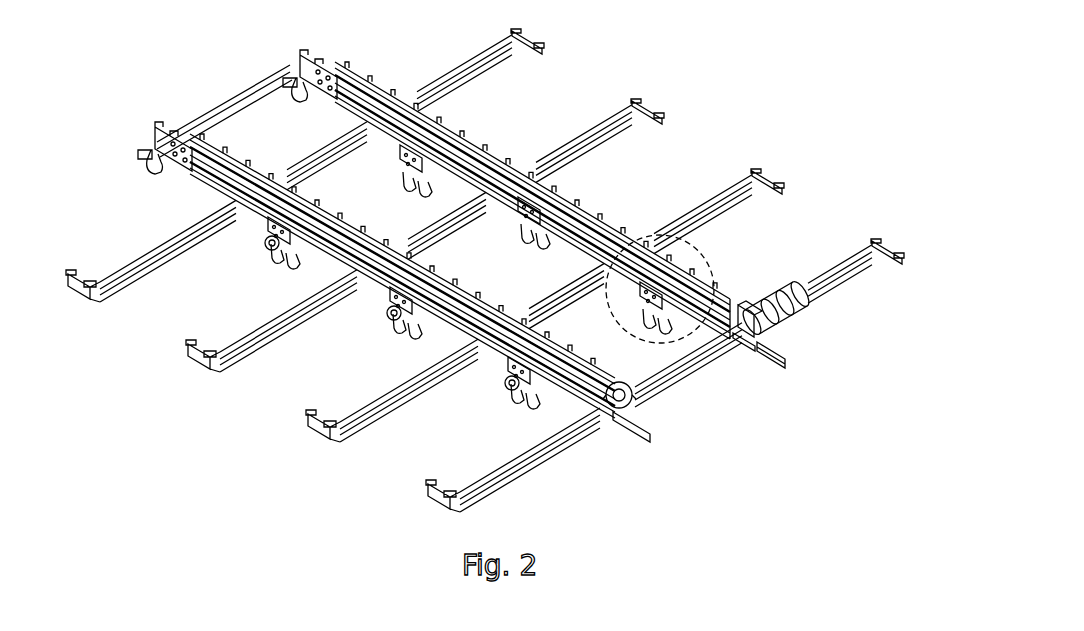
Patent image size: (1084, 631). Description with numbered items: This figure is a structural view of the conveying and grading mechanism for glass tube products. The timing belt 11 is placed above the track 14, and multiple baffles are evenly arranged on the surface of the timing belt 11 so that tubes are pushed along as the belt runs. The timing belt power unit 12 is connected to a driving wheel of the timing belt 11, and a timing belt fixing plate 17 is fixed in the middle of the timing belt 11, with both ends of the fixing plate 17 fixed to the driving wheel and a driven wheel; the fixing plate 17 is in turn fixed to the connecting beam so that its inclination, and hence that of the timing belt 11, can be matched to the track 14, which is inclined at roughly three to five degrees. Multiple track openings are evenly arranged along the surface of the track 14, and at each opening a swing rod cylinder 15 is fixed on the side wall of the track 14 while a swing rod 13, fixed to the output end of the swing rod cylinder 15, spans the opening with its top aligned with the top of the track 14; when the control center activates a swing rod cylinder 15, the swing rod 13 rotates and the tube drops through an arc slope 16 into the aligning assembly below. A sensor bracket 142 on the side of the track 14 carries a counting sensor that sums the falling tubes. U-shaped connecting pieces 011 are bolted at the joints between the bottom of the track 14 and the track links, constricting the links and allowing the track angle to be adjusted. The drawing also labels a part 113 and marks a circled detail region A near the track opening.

The timing belt 11 is at (717, 283).
The timing belt power unit 12 is at (800, 303).
The swing rod 13 is at (530, 238).
The track 14 is at (780, 363).
The swing rod cylinder 15 is at (517, 390).
The arc slope 16 is at (857, 278).
The timing belt fixing plate 17 is at (592, 237).
The positioning teeth 113 is at (680, 263).
The sensor bracket 142 is at (510, 370).
The U-shaped connecting pieces 011 is at (610, 427).
The detail region A is at (690, 334).